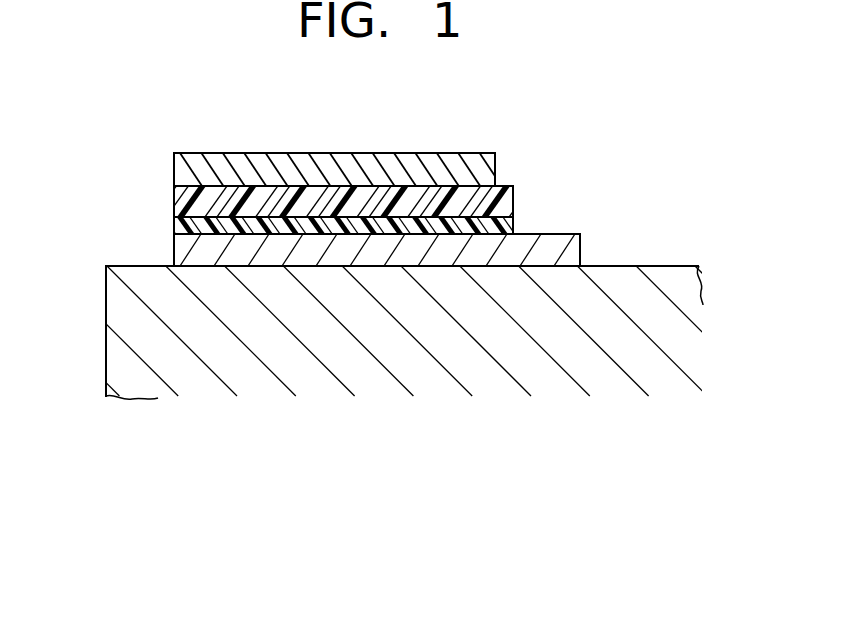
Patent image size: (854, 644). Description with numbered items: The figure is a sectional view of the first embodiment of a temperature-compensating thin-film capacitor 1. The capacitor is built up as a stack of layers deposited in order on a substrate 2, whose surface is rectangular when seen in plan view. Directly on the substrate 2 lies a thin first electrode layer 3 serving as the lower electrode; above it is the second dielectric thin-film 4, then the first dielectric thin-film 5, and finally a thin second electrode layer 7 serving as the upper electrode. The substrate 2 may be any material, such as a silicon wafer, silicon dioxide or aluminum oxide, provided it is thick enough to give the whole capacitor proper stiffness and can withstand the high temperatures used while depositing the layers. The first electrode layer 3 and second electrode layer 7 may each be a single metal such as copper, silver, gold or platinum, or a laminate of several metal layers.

The thin-film capacitor 1 is at (736, 130).
The substrate 2 is at (112, 358).
The first electrode layer 3 is at (581, 245).
The second dielectric thin-film 4 is at (174, 227).
The first dielectric thin-film 5 is at (174, 192).
The second electrode layer 7 is at (496, 170).